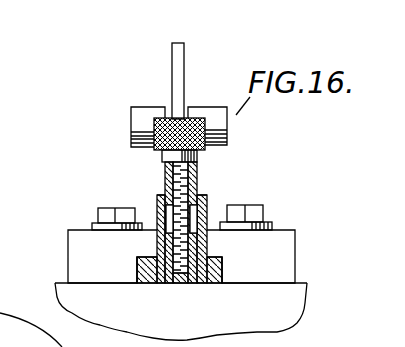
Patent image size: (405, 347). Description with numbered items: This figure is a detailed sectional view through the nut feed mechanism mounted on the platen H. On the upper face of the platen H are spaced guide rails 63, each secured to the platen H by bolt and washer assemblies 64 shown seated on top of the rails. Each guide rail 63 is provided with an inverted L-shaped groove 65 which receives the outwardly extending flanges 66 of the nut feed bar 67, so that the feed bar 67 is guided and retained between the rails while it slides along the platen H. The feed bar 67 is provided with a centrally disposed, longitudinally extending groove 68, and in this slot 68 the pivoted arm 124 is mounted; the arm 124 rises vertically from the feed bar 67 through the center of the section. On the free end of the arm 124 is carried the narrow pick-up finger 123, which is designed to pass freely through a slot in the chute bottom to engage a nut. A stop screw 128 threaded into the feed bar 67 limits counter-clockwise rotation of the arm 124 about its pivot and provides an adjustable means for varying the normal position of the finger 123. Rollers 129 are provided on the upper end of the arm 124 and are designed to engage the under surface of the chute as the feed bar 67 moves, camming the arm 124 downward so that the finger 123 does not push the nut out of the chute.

The pick-up finger 123 is at (172, 50).
The rollers 129 is at (212, 107).
The stop screw 128 is at (131, 132).
The pivoted arm 124 is at (200, 173).
The longitudinally extending groove 68 is at (203, 198).
The inverted L-shaped groove 65 is at (133, 285).
The guide rails 63 is at (78, 242).
The outwardly extending flanges 66 is at (140, 261).
The bolt and washer assemblies 64 is at (107, 212).
The nut feed bars 67 is at (195, 284).
The platen H is at (297, 323).